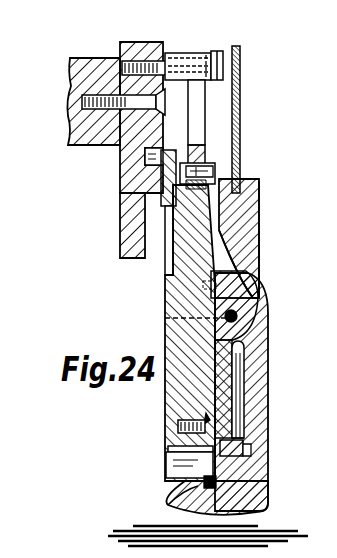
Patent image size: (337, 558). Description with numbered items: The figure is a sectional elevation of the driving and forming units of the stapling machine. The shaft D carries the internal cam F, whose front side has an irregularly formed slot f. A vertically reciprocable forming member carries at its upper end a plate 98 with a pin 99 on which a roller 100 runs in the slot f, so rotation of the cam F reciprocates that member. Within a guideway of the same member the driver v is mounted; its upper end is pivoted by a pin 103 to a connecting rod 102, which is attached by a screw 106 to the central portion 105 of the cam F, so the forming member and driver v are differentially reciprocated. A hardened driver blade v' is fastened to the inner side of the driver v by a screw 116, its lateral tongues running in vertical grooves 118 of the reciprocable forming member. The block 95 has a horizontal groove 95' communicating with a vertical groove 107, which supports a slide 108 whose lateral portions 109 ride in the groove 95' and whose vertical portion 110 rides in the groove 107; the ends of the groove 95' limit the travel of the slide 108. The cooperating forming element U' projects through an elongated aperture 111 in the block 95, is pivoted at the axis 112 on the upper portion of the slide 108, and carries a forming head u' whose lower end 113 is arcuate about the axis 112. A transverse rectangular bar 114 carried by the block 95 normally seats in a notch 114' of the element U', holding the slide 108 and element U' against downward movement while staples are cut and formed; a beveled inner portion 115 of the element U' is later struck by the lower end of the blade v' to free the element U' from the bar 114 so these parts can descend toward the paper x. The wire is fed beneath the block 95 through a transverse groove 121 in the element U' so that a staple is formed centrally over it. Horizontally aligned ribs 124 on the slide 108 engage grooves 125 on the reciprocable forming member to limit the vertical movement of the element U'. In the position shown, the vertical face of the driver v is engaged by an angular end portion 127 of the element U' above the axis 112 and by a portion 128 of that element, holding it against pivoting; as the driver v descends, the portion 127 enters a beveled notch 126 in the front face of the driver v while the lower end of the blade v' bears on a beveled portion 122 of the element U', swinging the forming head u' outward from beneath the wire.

The shaft D is at (60, 63).
The internal cam F is at (111, 37).
The cam slot f is at (150, 136).
The plate 98 is at (128, 190).
The pin 99 is at (160, 162).
The roller 100 is at (140, 150).
The connecting rod 102 is at (190, 100).
The pin 103 is at (208, 165).
The central portion of cam 105 is at (158, 38).
The screw 106 is at (215, 58).
The vertical groove 107 is at (232, 395).
The slide 108 is at (240, 336).
The lateral portions of slide 109 is at (250, 272).
The vertical portion of slide 110 is at (236, 412).
The elongated aperture 111 is at (246, 228).
The pivot axis 112 is at (246, 286).
The lower end of forming head 113 is at (246, 504).
The bar 114 is at (272, 431).
The notch 114' is at (286, 439).
The beveled inner portion 115 is at (192, 461).
The screw 116 is at (172, 419).
The vertical grooves 118 is at (178, 445).
The transverse groove 121 is at (196, 476).
The beveled portion 122 is at (178, 490).
The ribs 124 is at (157, 308).
The grooves 125 is at (157, 276).
The beveled notch 126 is at (240, 190).
The angular end portion 127 is at (234, 252).
The portion of member U' 128 is at (178, 298).
The block 95 is at (258, 238).
The horizontal groove 95' is at (268, 311).
The driver v is at (167, 330).
The driver blade v' is at (168, 406).
The cooperating forming element U' is at (263, 392).
The forming head u' is at (273, 480).
The paper x is at (139, 516).